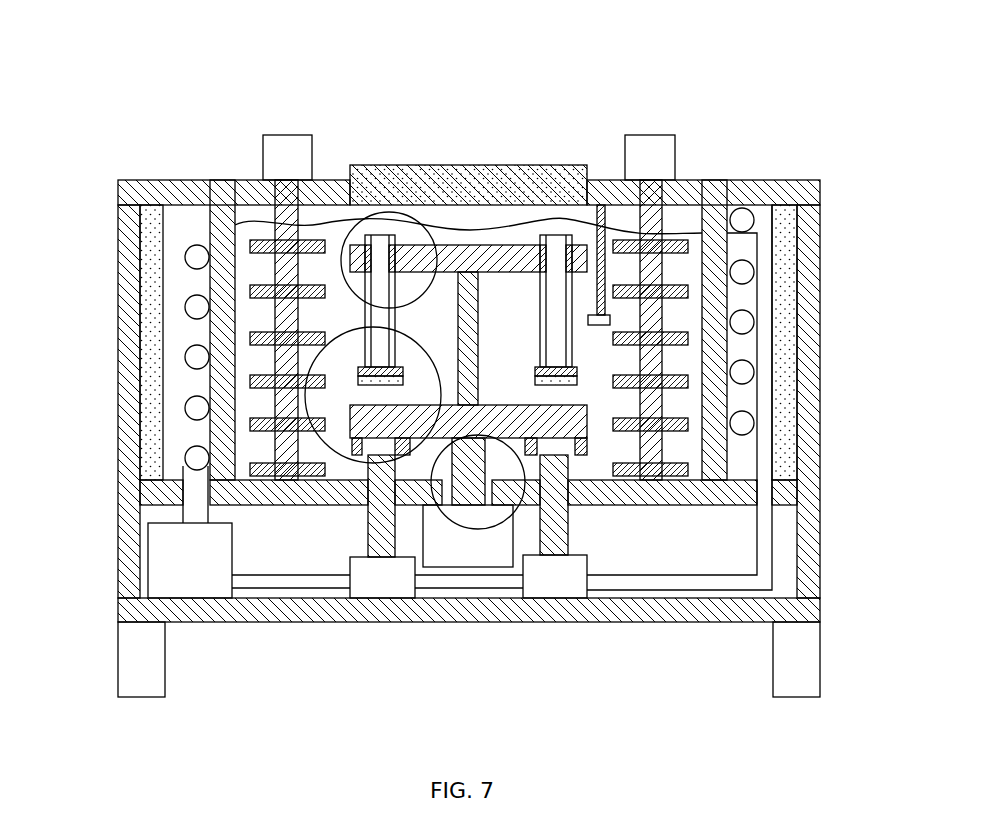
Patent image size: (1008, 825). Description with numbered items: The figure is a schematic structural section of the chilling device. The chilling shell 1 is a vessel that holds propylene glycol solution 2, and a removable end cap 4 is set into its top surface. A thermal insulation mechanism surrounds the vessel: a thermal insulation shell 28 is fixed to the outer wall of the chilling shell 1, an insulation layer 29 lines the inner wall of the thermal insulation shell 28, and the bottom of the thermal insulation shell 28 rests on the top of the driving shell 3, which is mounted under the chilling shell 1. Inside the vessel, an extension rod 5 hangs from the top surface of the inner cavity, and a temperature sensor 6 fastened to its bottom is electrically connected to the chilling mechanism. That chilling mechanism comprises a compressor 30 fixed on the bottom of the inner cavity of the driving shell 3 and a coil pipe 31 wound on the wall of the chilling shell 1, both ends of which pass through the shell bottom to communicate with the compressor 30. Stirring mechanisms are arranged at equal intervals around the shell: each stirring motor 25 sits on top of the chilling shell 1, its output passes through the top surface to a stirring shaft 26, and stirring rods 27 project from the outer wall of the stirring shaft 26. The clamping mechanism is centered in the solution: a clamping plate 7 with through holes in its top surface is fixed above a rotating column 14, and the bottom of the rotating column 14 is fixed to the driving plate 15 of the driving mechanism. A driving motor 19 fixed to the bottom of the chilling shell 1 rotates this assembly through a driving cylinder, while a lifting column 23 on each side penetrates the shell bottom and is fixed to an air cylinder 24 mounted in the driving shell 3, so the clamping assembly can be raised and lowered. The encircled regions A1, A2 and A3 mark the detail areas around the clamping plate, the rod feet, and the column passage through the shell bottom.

The chilling shell 1 is at (210, 202).
The propylene glycol solution 2 is at (252, 218).
The driving shell 3 is at (812, 575).
The removable end cap 4 is at (412, 180).
The extension rod 5 is at (597, 235).
The temperature sensor 6 is at (600, 318).
The clamping plate 7 is at (490, 258).
The rotating column 14 is at (467, 338).
The driving plate 15 is at (557, 415).
The driving motor 19 is at (487, 542).
The lifting column 23 is at (380, 503).
The air cylinder 24 is at (572, 588).
The stirring motor 25 is at (283, 158).
The stirring shaft 26 is at (288, 265).
The stirring rods 27 is at (250, 293).
The thermal insulation shell 28 is at (128, 358).
The insulation layer 29 is at (147, 425).
The compressor 30 is at (195, 553).
The coil pipe 31 is at (197, 458).
The detail A1 is at (413, 236).
The detail A2 is at (322, 358).
The detail A3 is at (457, 518).